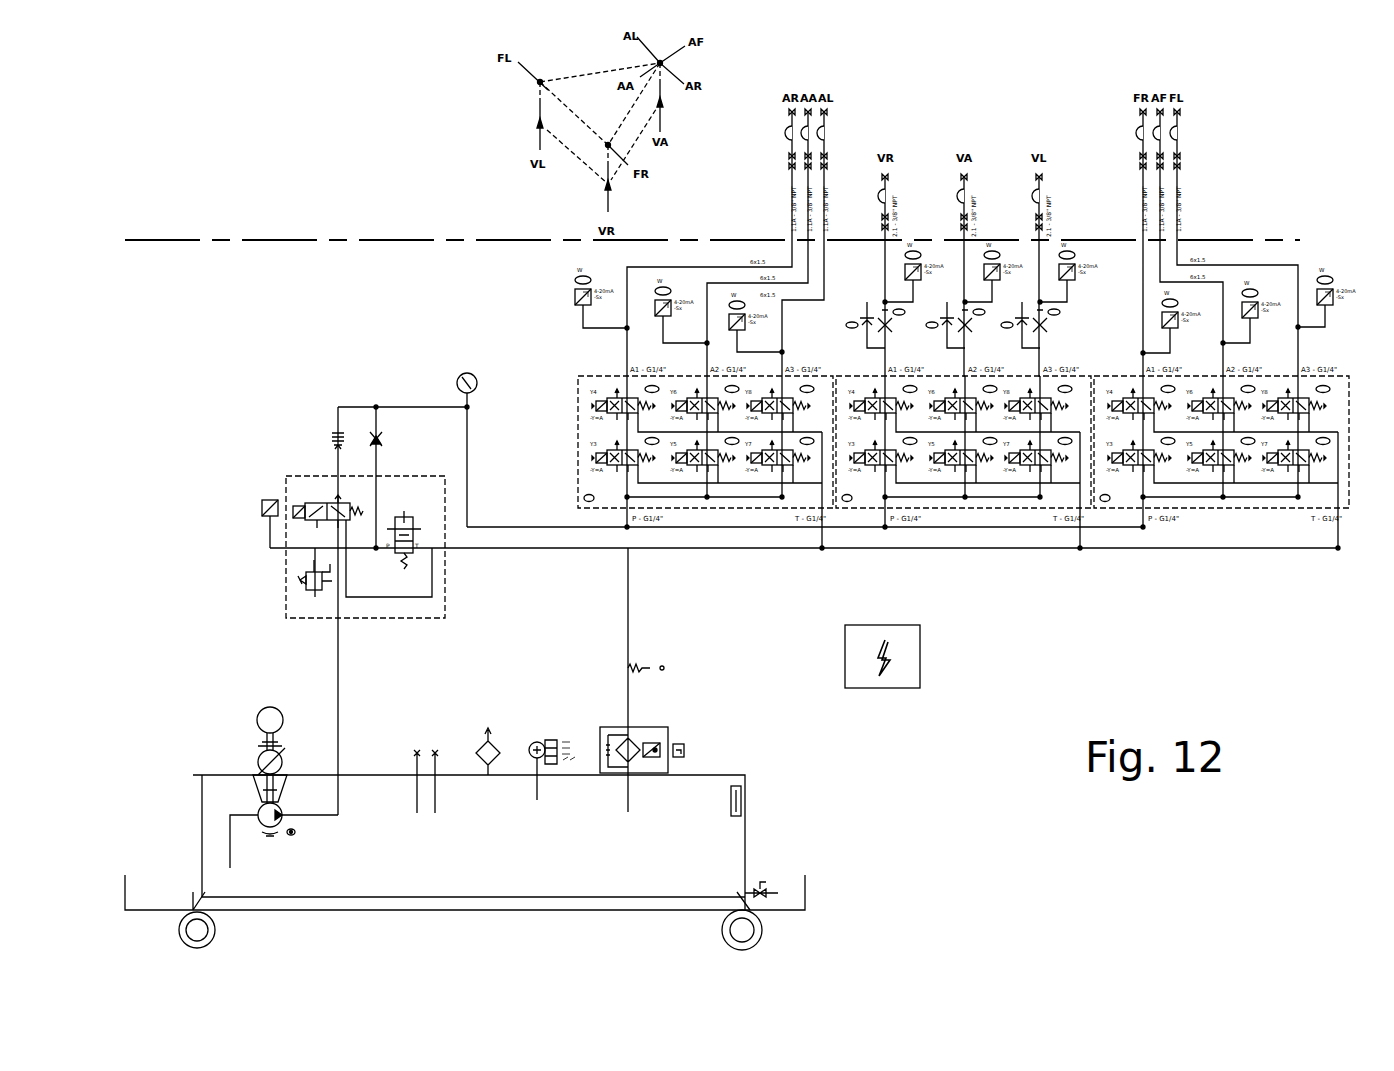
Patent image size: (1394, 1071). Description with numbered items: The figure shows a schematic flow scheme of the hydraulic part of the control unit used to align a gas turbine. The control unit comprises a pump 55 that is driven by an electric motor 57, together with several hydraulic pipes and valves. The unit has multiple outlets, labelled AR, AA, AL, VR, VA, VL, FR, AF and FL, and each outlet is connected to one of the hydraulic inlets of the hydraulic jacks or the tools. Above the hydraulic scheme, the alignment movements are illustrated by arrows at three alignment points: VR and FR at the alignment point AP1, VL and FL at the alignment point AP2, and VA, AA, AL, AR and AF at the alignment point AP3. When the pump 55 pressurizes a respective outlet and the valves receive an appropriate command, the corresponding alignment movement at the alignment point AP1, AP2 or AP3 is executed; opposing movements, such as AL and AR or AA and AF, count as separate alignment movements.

The pump 55 is at (260, 808).
The electric motor 57 is at (262, 752).
The alignment point AP1 is at (608, 145).
The alignment point AP2 is at (540, 82).
The alignment point AP3 is at (660, 63).